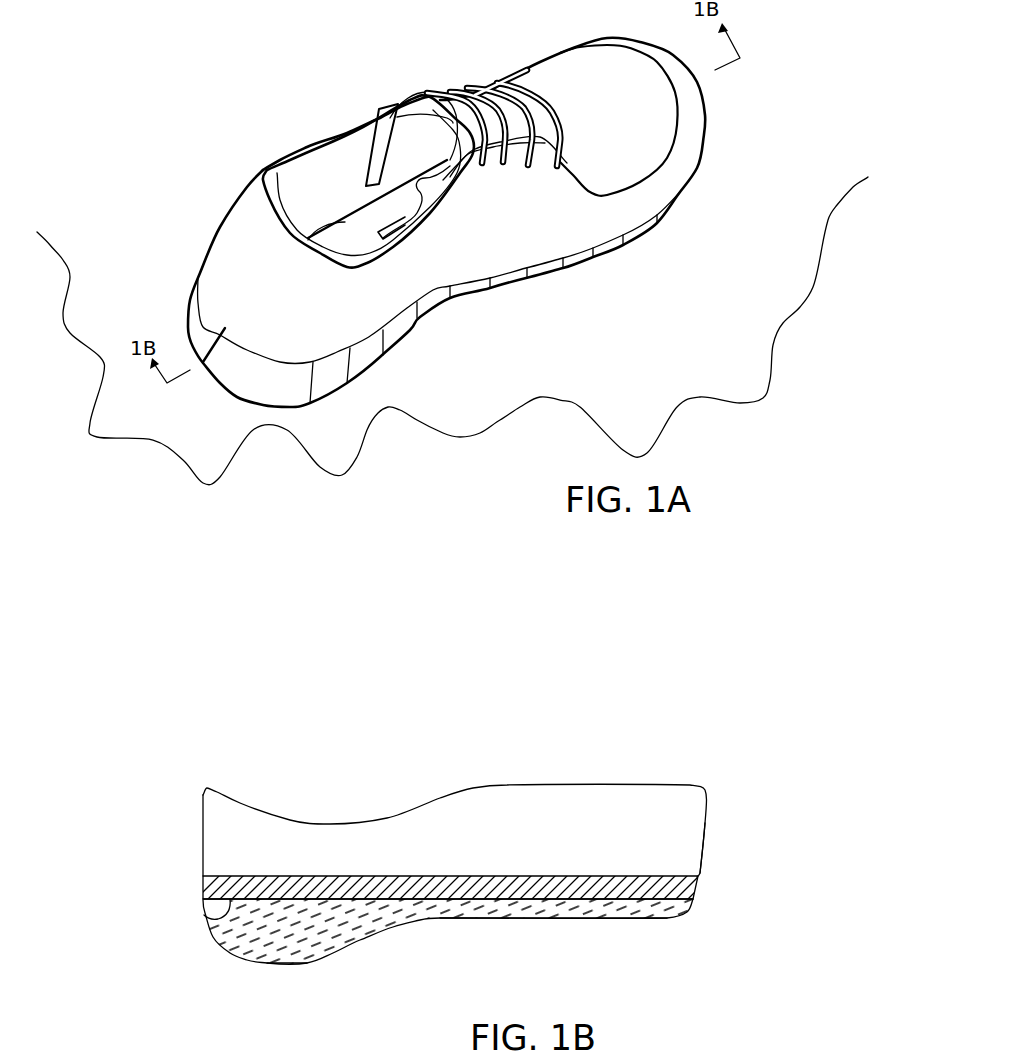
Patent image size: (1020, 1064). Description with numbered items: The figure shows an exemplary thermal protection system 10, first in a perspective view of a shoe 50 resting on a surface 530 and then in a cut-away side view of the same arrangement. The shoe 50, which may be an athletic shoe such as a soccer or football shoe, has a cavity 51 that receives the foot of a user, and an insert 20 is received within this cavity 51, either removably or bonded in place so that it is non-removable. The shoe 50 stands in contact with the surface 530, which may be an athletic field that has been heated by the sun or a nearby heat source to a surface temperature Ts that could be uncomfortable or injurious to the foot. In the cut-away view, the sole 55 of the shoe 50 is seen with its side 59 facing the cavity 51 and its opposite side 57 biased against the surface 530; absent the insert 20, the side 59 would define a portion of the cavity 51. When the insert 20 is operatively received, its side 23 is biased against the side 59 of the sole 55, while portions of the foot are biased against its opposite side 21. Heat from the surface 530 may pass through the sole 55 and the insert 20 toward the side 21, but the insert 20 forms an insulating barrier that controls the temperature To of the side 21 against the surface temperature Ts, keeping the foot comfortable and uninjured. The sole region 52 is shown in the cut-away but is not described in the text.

In FIG. 1B, the thermal protection system 10 is at (700, 724).
In FIG. 1A, the insert 20 is at (332, 237).
In FIG. 1B, the insert 20 is at (258, 876).
In FIG. 1A, the side of insert 21 is at (350, 225).
In FIG. 1B, the side of insert 21 is at (322, 876).
In FIG. 1B, the side of insert 23 is at (460, 900).
In FIG. 1A, the shoe 50 is at (653, 133).
In FIG. 1B, the shoe 50 is at (705, 825).
In FIG. 1A, the cavity 51 is at (395, 223).
In FIG. 1B, the cavity 51 is at (607, 839).
In FIG. 1B, the midsole 52 is at (277, 947).
In FIG. 1A, the sole 55 is at (263, 390).
In FIG. 1B, the sole 55 is at (347, 955).
In FIG. 1B, the side of sole 57 is at (307, 963).
In FIG. 1B, the side of sole 59 is at (203, 923).
In FIG. 1A, the surface 530 is at (657, 402).
In FIG. 1A, the temperature of side of insert To is at (360, 227).
In FIG. 1B, the temperature of side of insert To is at (480, 876).
In FIG. 1A, the surface temperature Ts is at (533, 380).
In FIG. 1B, the surface temperature Ts is at (563, 919).